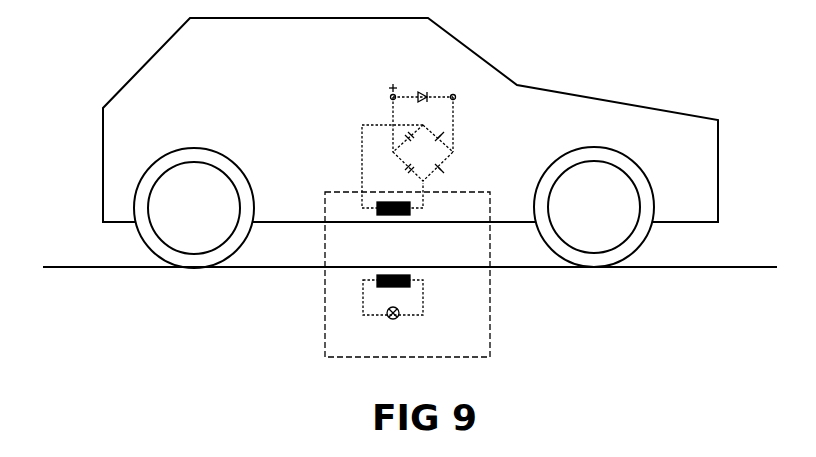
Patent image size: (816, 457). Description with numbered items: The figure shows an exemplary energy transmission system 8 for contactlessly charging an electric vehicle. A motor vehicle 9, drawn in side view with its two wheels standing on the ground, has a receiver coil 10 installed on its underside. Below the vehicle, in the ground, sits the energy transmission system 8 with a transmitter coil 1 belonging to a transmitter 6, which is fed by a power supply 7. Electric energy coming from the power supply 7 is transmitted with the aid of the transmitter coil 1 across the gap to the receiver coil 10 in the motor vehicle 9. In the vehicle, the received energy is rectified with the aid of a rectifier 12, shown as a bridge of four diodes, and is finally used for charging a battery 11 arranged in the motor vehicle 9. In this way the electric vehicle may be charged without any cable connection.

The transmitter coil 1 is at (388, 273).
The transmitter 6 is at (437, 306).
The power supply 7 is at (388, 320).
The energy transmission system 8 is at (322, 288).
The motor vehicle 9 is at (651, 105).
The receiver coil 10 is at (400, 213).
The battery 11 is at (420, 83).
The rectifier 12 is at (445, 170).